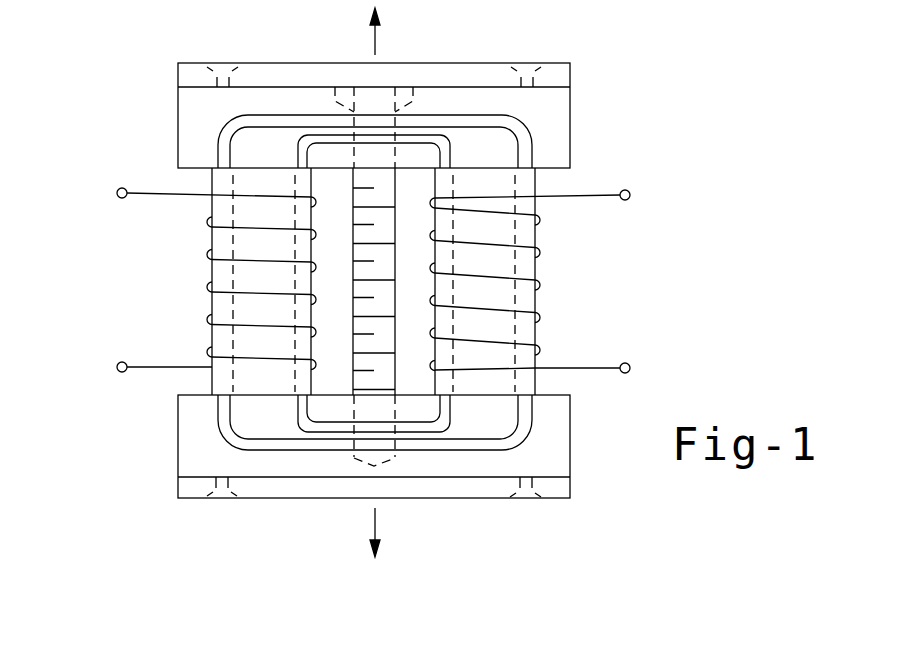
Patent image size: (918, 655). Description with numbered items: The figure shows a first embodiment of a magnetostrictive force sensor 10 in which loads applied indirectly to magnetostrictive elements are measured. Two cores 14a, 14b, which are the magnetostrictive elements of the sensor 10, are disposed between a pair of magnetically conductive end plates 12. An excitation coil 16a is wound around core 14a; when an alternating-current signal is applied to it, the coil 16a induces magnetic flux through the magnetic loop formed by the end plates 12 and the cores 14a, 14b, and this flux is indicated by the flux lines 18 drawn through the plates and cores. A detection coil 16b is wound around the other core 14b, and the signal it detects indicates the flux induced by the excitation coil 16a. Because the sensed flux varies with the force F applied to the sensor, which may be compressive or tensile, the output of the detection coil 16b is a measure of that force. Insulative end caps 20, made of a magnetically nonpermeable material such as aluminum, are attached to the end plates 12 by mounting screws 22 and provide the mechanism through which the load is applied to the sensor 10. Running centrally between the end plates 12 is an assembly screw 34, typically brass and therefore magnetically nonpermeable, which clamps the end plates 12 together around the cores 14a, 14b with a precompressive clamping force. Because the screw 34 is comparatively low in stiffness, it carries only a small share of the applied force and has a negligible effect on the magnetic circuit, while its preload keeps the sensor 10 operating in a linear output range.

The magnetostrictive force sensor 10 is at (690, 163).
The end plates 12 is at (178, 134).
The core 14a is at (252, 307).
The core 14b is at (512, 310).
The excitation coil 16a is at (152, 198).
The detection coil 16b is at (585, 195).
The flux lines 18 is at (226, 128).
The insulative end caps 20 is at (570, 78).
The mounting screws 22 is at (222, 62).
The assembly screw 34 is at (360, 277).